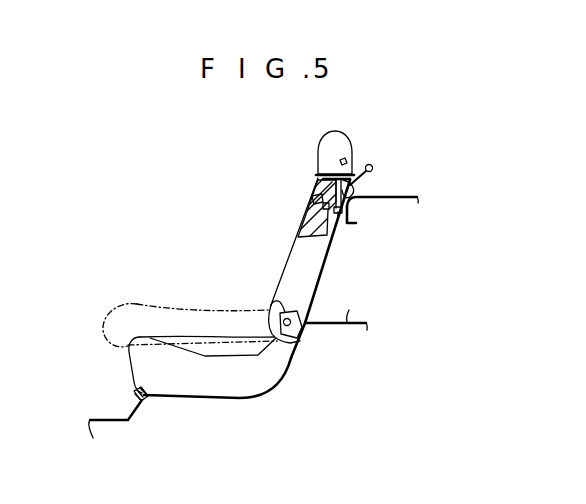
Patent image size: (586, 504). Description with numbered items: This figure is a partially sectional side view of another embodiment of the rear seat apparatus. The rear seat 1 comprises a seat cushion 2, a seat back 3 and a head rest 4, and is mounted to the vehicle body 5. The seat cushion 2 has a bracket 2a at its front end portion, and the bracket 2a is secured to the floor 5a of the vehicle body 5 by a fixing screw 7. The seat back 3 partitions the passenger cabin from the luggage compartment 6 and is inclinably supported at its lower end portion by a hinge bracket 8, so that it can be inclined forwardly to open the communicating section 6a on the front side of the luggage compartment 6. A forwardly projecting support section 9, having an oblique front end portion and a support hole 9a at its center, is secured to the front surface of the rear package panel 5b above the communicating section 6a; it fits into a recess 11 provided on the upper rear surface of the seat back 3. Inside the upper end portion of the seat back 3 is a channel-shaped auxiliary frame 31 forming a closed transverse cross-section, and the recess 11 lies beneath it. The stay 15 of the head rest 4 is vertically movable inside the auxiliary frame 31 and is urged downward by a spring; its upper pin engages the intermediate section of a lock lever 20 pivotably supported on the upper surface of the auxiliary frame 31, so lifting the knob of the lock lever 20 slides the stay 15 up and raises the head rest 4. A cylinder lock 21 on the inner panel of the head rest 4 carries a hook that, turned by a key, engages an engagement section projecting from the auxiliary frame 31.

The rear seat 1 is at (214, 244).
The seat cushion 2 is at (134, 368).
The bracket 2a is at (143, 403).
The seat back 3 is at (292, 272).
The head rest 4 is at (329, 137).
The vehicle body 5 is at (407, 184).
The floor 5a is at (239, 398).
The rear package panel 5b is at (355, 216).
The luggage compartment 6 is at (344, 331).
The communicating section 6a is at (320, 278).
The fixing screw 7 is at (135, 393).
The hinge bracket 8 is at (280, 306).
The support section 9 is at (318, 206).
The support hole 9a is at (338, 218).
The recess 11 is at (313, 218).
The stay 15 is at (312, 191).
The lock lever 20 is at (372, 166).
The cylinder lock 21 is at (343, 162).
The auxiliary frame 31 is at (314, 173).